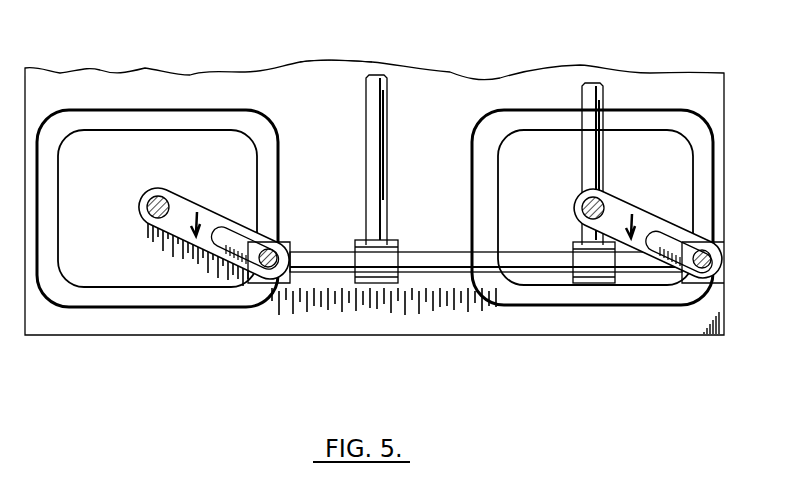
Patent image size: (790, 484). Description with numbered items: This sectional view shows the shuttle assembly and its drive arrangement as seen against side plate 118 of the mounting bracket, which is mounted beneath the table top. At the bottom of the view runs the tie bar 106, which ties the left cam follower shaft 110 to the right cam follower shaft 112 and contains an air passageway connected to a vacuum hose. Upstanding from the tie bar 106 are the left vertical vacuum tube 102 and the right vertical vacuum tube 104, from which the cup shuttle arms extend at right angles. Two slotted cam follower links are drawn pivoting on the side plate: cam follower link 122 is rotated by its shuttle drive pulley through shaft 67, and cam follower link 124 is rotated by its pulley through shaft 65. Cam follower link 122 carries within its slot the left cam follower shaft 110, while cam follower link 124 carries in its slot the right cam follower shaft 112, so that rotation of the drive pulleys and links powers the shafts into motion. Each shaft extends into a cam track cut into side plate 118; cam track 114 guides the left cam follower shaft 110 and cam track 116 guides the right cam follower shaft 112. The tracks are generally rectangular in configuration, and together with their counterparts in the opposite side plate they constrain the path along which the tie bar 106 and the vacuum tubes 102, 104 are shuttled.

The shaft 65 is at (583, 205).
The shaft 67 is at (148, 203).
The left vertical vacuum tube 102 is at (373, 122).
The right vertical vacuum tube 104 is at (590, 104).
The tie bar 106 is at (445, 258).
The left cam follower shaft 110 is at (267, 294).
The right cam follower shaft 112 is at (718, 267).
The cam track 114 is at (257, 132).
The cam track 116 is at (688, 132).
The side plate 118 is at (343, 86).
The slotted cam follower link 122 is at (210, 225).
The slotted cam follower link 124 is at (627, 216).